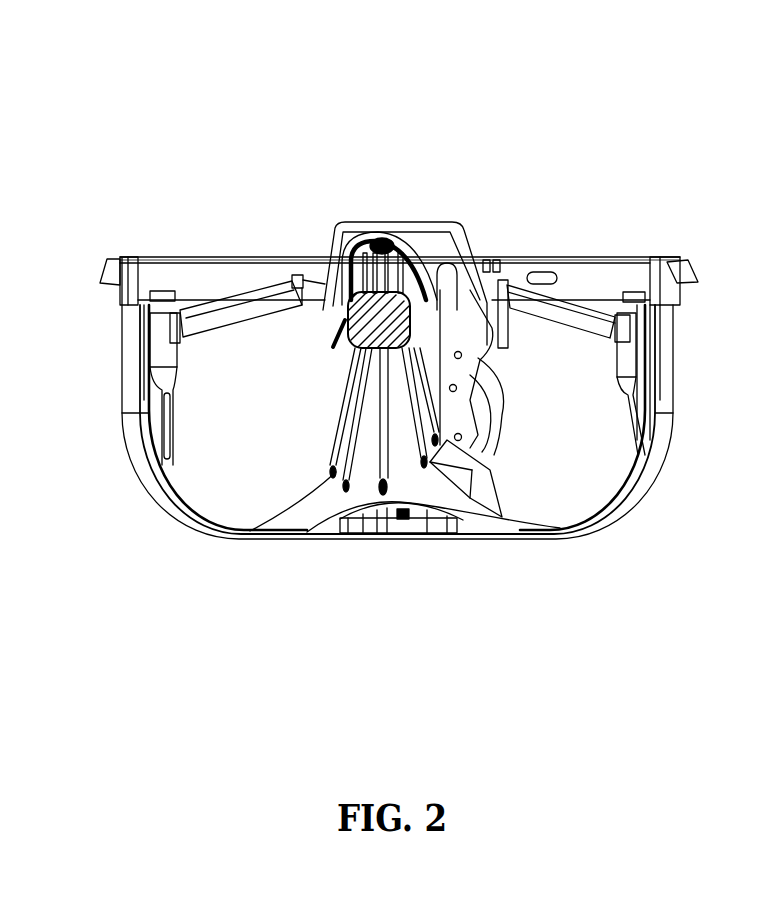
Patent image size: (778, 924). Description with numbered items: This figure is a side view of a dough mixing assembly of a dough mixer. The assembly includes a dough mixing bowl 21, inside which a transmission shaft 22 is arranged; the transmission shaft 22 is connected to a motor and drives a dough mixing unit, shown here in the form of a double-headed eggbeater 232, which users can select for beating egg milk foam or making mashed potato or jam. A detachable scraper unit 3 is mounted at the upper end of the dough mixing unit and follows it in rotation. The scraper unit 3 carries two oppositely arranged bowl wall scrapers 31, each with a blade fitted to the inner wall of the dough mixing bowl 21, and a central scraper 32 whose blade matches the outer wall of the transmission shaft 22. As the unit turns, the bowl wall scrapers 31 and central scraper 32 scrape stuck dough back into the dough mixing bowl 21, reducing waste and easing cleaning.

The scraper unit 3 is at (243, 310).
The dough mixing bowl 21 is at (157, 483).
The transmission shaft 22 is at (402, 418).
The bowl wall scraper 31 is at (456, 412).
The central scraper 32 is at (646, 257).
The double-headed eggbeater 232 is at (398, 232).